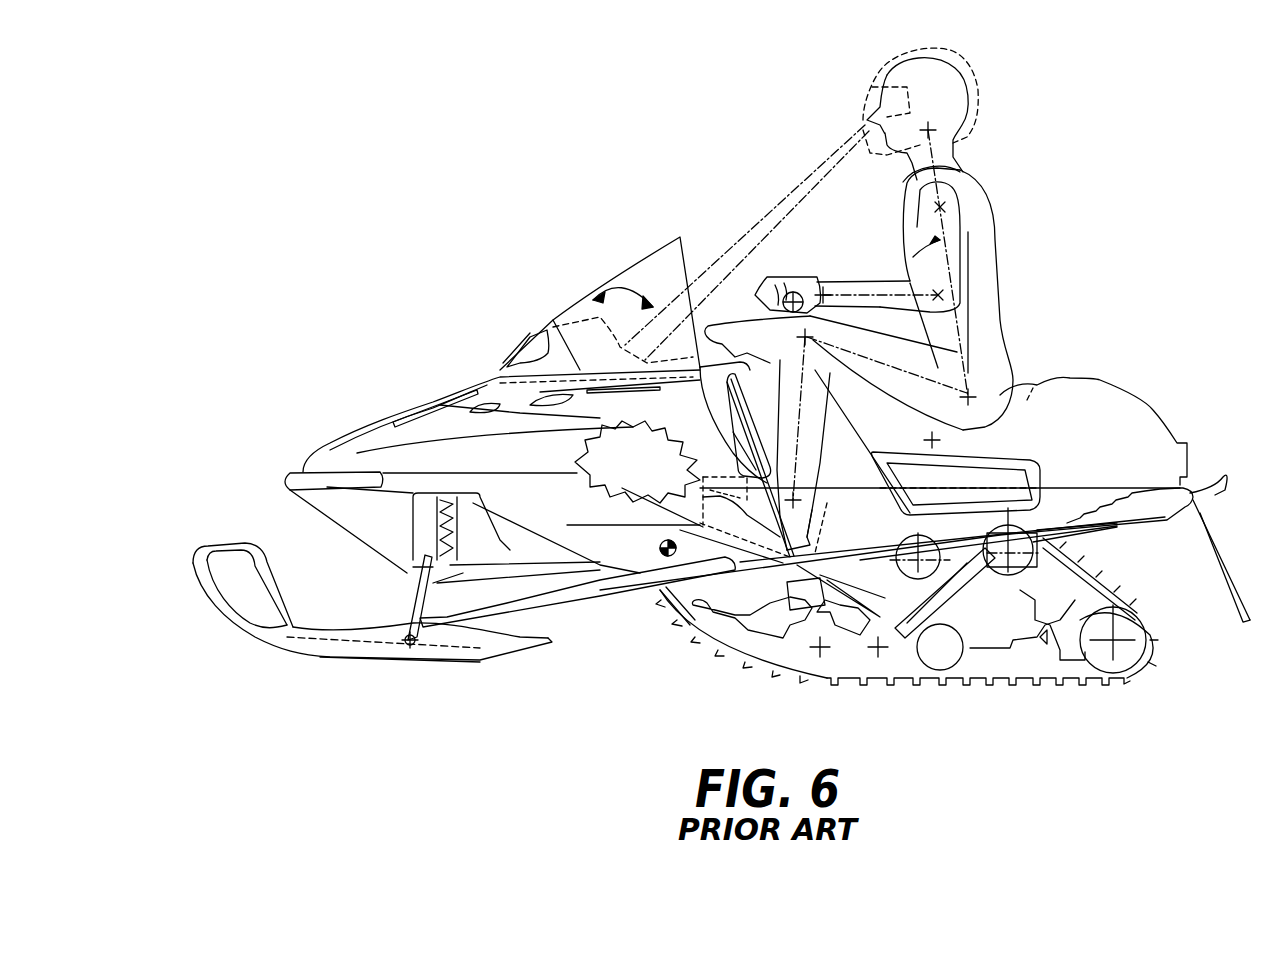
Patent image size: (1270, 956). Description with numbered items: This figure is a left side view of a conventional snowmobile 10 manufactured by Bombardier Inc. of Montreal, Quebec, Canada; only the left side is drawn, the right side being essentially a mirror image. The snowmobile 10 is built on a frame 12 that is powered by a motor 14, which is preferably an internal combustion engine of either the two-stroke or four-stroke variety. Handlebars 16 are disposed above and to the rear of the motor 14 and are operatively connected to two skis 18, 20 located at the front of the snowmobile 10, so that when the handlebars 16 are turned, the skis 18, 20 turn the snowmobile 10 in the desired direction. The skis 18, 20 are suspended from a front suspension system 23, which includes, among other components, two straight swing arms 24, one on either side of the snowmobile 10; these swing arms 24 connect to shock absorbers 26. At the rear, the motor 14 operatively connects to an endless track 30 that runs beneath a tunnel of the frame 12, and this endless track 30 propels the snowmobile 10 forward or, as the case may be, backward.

The snowmobile 10 is at (1107, 366).
The frame 12 is at (1090, 493).
The motor 14 is at (632, 483).
The handlebars 16 is at (760, 277).
The ski 18 is at (383, 653).
The ski 20 is at (372, 602).
The front suspension system 23 is at (400, 603).
The swing arm 24 is at (563, 588).
The shock absorber 26 is at (443, 520).
The endless track 30 is at (1065, 667).